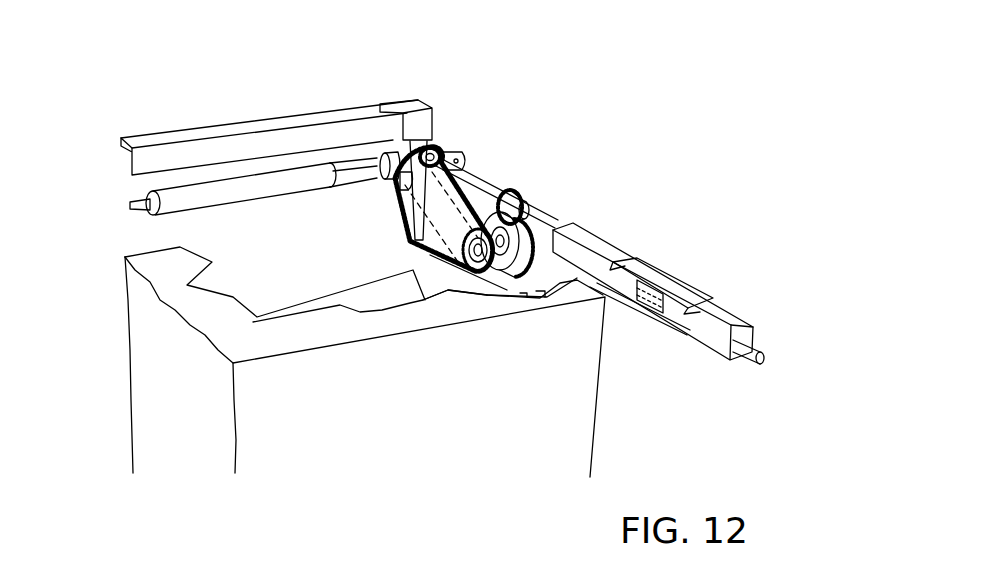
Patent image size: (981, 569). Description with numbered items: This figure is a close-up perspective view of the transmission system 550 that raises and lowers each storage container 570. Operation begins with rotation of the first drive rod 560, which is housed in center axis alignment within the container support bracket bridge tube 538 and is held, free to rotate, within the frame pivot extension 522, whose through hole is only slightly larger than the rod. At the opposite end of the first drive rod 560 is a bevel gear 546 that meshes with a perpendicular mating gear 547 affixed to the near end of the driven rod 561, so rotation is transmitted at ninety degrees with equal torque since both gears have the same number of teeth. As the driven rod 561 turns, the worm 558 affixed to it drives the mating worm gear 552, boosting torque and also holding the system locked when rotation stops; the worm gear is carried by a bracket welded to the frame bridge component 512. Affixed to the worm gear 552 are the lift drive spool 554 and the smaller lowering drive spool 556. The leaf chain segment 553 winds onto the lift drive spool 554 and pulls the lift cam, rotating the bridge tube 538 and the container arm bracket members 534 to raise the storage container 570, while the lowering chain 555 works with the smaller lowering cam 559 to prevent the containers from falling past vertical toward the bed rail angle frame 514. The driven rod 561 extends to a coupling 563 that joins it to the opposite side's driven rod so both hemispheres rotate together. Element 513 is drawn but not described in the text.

The frame bridge component 512 is at (593, 227).
The cover plate 513 is at (657, 267).
The bed rail angle frame 514 is at (141, 133).
The frame pivot extension 522 is at (407, 150).
The container arm bracket members 534 is at (533, 300).
The container support bracket bridge tube 538 is at (198, 183).
The gear 546 is at (430, 143).
The mating gear 547 is at (467, 155).
The transmission system 550 is at (431, 325).
The worm gear 552 is at (563, 277).
The leaf chain segment 553 is at (400, 268).
The lift drive spool 554 is at (495, 278).
The lowering chain 555 is at (427, 143).
The lowering drive spool 556 is at (474, 258).
The worm 558 is at (513, 187).
The lowering cam 559 is at (383, 162).
The first drive rod 560 is at (132, 207).
The driven rod 561 is at (560, 230).
The coupling 563 is at (637, 313).
The storage container 570 is at (145, 253).